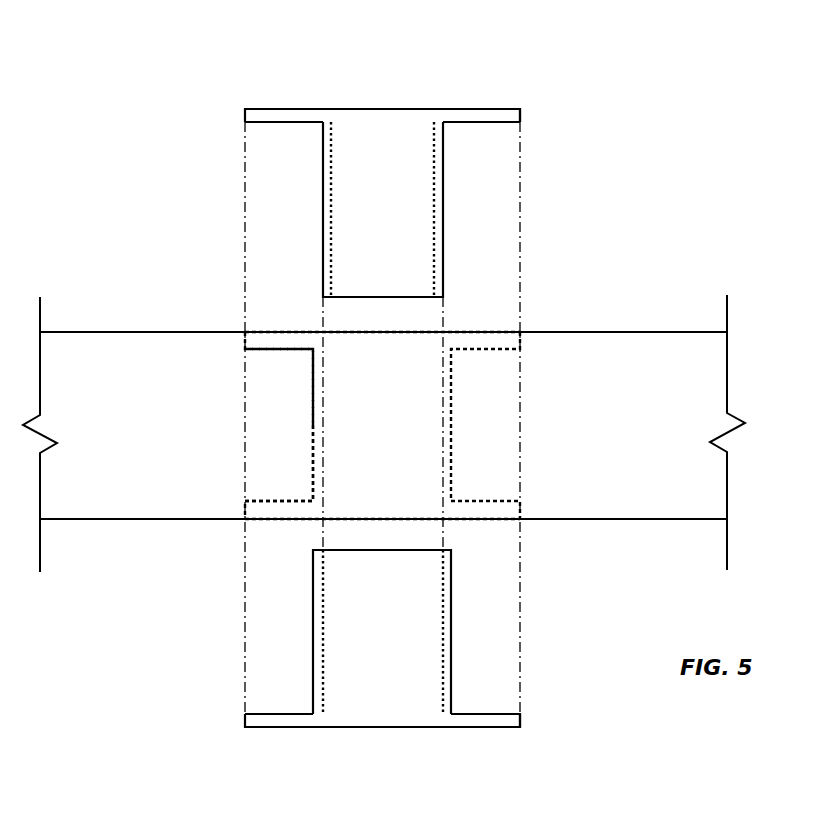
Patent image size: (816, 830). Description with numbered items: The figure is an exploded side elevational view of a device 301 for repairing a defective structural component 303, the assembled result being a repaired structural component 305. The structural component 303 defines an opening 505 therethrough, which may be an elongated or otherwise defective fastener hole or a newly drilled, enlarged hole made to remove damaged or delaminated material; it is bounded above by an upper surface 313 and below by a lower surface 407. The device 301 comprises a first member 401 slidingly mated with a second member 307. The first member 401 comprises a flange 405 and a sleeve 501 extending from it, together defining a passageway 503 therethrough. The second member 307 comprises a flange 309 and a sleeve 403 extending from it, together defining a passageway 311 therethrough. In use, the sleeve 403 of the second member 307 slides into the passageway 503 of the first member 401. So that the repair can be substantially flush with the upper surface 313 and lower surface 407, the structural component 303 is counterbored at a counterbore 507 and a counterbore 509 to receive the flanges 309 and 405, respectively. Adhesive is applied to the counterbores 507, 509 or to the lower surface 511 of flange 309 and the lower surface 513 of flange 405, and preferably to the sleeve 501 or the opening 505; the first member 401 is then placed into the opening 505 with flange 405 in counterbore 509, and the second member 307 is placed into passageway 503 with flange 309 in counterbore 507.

The device 301 is at (375, 154).
The structural component 303 is at (175, 345).
The repaired structural component 305 is at (700, 226).
The second member 307 is at (251, 100).
The flange 309 is at (507, 118).
The passageway 311 is at (363, 238).
The upper surface 313 is at (588, 330).
The first member 401 is at (396, 683).
The sleeve 403 is at (440, 183).
The flange 405 is at (277, 722).
The lower surface 407 is at (568, 519).
The sleeve 501 is at (452, 648).
The passageway 503 is at (390, 695).
The opening 505 is at (415, 420).
The counterbore 507 is at (285, 340).
The counterbore 509 is at (250, 510).
The lower surface 511 is at (290, 123).
The lower surface 513 is at (500, 712).